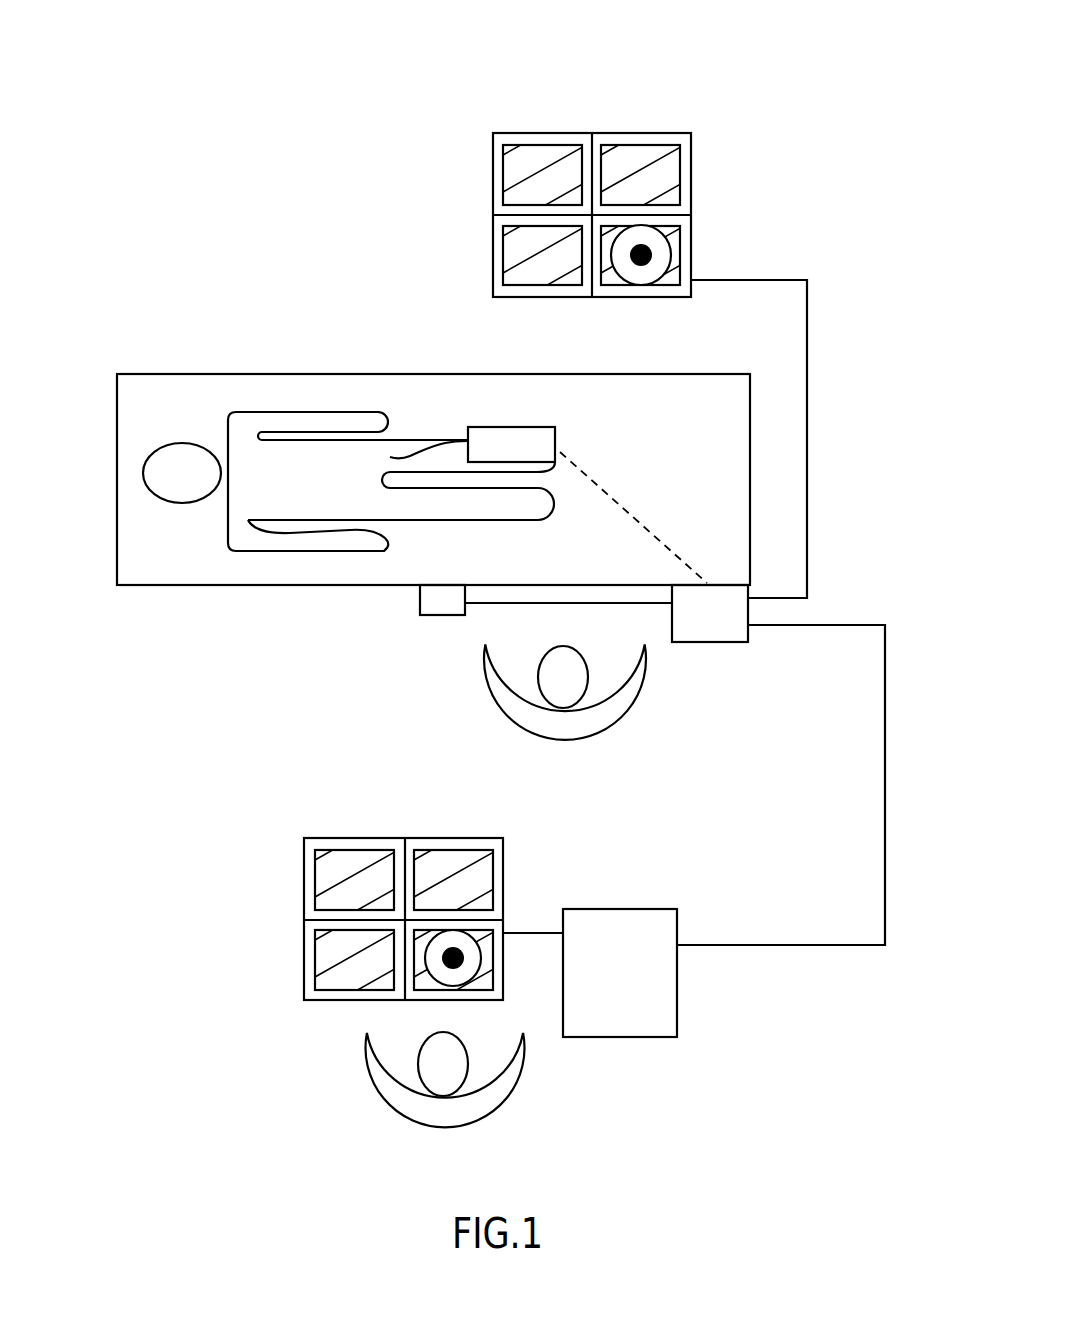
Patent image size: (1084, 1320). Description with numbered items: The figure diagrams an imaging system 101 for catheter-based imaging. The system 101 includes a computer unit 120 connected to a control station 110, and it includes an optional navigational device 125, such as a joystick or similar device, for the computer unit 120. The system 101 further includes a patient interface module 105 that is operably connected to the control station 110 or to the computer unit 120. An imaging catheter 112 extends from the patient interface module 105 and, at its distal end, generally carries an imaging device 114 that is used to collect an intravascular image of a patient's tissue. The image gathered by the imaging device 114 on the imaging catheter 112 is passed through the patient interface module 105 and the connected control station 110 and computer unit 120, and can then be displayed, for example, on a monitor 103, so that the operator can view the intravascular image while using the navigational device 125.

The imaging system 101 is at (572, 70).
The monitor 103 is at (693, 233).
The patient interface module 105 is at (556, 438).
The control station 110 is at (731, 642).
The imaging catheter 112 is at (445, 443).
The imaging device 114 is at (402, 457).
The computer unit 120 is at (645, 1037).
The navigational device 125 is at (420, 603).